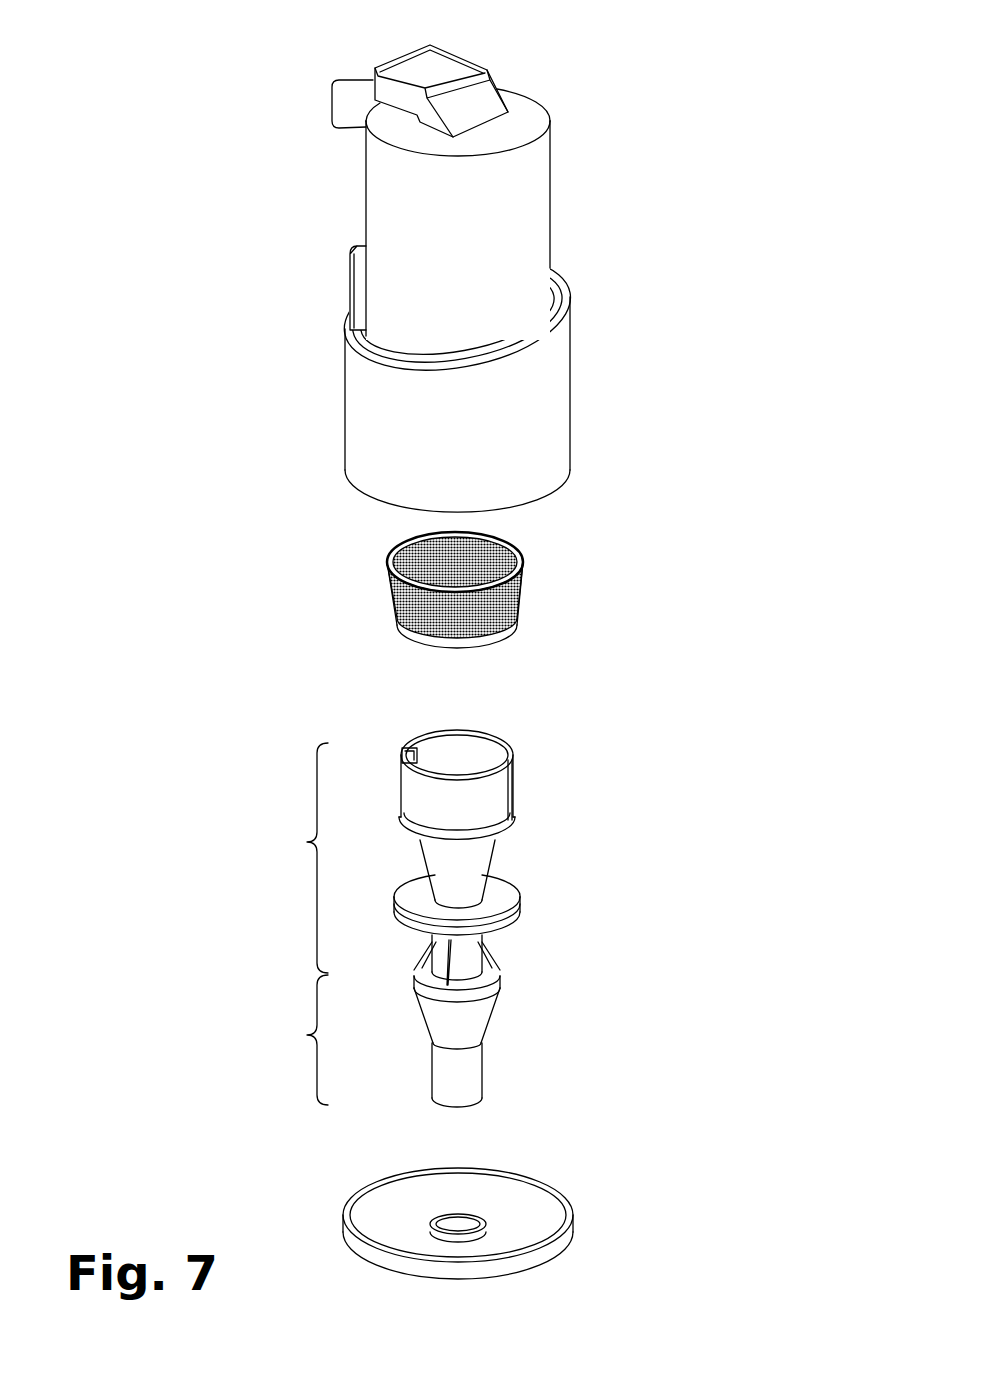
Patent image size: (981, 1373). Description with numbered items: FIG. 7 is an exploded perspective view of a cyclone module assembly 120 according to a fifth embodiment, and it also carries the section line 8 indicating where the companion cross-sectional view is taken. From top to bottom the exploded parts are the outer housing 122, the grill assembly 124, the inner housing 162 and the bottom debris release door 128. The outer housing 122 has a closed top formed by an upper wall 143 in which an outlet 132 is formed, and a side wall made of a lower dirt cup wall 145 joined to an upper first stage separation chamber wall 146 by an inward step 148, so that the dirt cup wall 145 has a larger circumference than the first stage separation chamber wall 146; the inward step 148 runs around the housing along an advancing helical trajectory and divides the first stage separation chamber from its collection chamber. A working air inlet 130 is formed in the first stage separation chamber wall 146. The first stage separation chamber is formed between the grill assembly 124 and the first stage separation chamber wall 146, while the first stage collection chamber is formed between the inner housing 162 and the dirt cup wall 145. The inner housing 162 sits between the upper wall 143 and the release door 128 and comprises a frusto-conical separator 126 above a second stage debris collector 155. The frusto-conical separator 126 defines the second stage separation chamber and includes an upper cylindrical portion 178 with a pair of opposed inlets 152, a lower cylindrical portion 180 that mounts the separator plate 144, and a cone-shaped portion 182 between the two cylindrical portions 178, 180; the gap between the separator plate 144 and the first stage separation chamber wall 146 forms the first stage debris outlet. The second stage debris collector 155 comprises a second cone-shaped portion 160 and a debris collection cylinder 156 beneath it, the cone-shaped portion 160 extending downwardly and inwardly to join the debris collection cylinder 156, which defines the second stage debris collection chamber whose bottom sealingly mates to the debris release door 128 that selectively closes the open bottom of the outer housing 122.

The section line 8- 8 is at (553, 132).
The cyclone module assembly 120 is at (168, 172).
The outer housing 122 is at (458, 191).
The grill assembly 124 is at (527, 594).
The frusto-conical separator 126 is at (438, 835).
The bottom debris release door 128 is at (343, 1195).
The working air inlet 130 is at (345, 100).
The outlet 132 is at (453, 65).
The upper wall 143 is at (515, 98).
The separator plate 144 is at (498, 898).
The dirt cup wall 145 is at (516, 376).
The first stage separation chamber wall 146 is at (376, 166).
The inward step 148 is at (556, 303).
The opposed inlets 152 is at (402, 758).
The second stage debris collector 155 is at (428, 1041).
The debris collection cylinder 156 is at (470, 1083).
The second cone-shaped portion 160 is at (478, 1015).
The inner housing 162 is at (452, 762).
The upper cylindrical portion 178 is at (477, 788).
The lower cylindrical portion 180 is at (472, 963).
The cone-shaped portion 182 is at (475, 862).